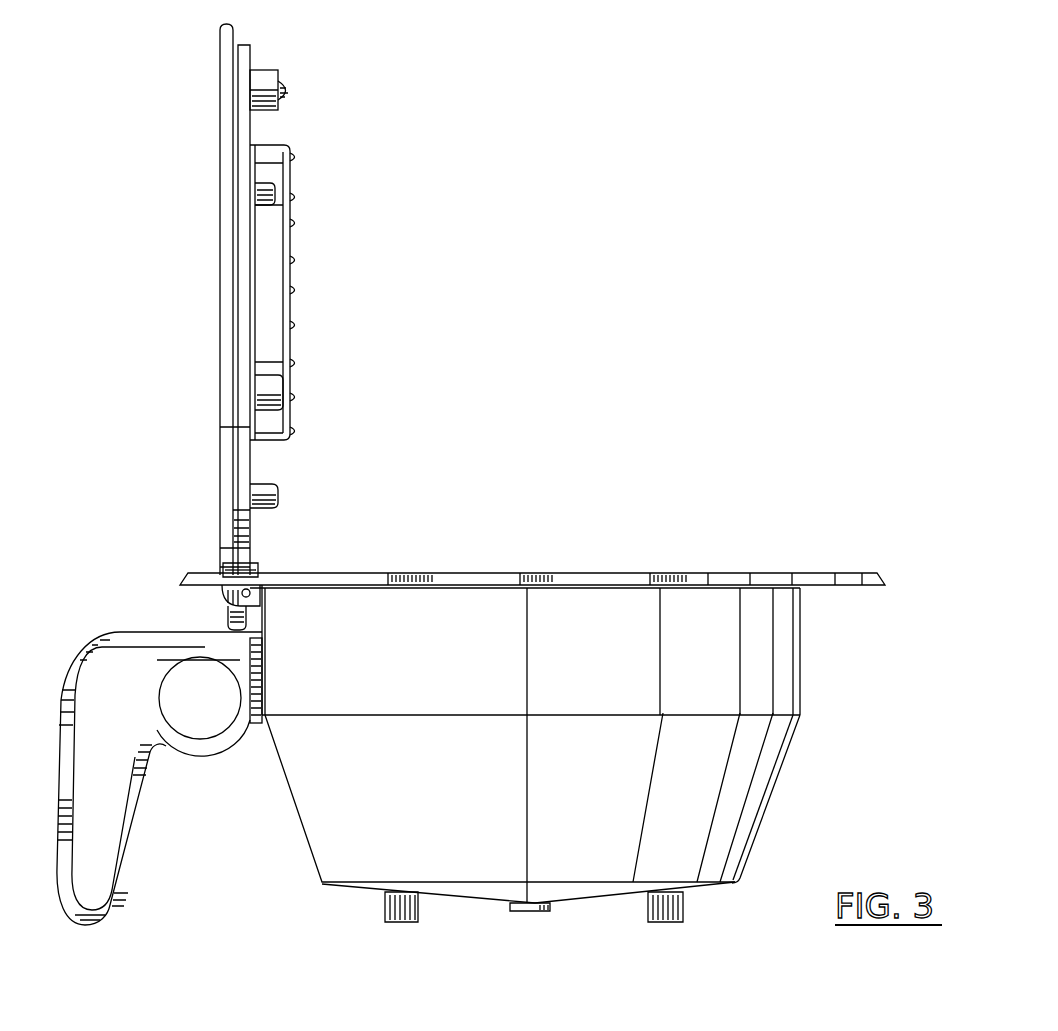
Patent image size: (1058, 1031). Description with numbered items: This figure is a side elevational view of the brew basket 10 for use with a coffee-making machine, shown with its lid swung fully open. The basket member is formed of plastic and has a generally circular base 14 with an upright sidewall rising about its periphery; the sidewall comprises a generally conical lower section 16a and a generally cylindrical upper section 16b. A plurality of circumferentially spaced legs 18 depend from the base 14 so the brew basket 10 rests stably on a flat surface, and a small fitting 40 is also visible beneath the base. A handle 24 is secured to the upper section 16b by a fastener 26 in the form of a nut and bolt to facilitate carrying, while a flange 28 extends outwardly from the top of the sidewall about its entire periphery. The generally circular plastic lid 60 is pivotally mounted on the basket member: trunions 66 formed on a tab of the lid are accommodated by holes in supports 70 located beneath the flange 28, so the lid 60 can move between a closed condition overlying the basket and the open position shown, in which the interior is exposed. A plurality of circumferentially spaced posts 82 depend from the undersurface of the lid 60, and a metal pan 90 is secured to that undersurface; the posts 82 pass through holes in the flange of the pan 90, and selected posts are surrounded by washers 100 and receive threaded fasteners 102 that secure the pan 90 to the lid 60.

The brew basket 10 is at (704, 196).
The base 14 is at (476, 893).
The conical lower section 16a is at (757, 797).
The cylindrical upper section 16b is at (790, 650).
The legs 18 is at (390, 920).
The handle 24 is at (122, 837).
The fastener 26 is at (236, 673).
The flange 28 is at (866, 572).
The drain fitting 40 is at (525, 912).
The lid 60 is at (378, 285).
The trunions 66 is at (262, 592).
The supports 70 is at (262, 600).
The posts 82 is at (278, 490).
The metal pan 90 is at (292, 246).
The washers 100 is at (262, 70).
The threaded fasteners 102 is at (290, 87).